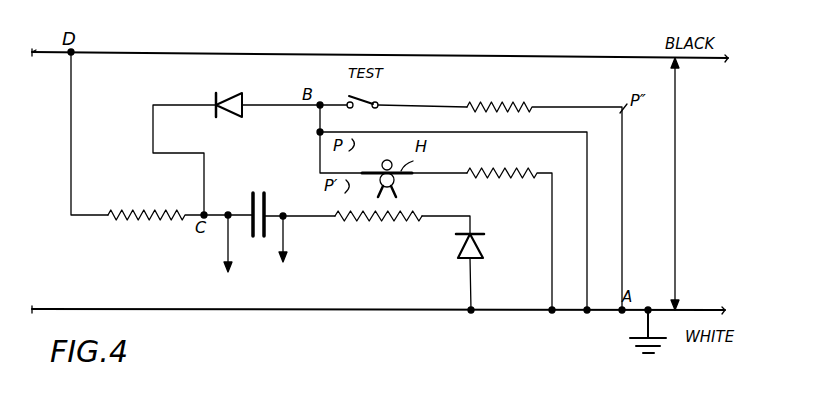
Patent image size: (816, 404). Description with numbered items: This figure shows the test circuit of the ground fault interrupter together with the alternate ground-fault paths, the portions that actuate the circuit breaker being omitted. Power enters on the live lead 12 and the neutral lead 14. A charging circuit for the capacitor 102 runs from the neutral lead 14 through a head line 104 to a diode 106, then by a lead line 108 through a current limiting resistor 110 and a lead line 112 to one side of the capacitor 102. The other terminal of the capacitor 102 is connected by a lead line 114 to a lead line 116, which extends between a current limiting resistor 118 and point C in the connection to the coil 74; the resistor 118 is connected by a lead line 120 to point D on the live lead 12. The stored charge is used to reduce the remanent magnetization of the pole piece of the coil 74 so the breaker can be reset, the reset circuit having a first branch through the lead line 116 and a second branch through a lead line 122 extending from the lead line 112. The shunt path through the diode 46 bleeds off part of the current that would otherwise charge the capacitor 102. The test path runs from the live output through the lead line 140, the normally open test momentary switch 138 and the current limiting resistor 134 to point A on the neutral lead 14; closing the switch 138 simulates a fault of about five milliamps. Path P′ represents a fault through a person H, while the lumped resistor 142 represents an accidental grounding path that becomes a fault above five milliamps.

The live lead 12 is at (584, 52).
The neutral lead 14 is at (323, 311).
The diode 46 is at (265, 93).
The coil 74 is at (244, 292).
The capacitor 102 is at (261, 195).
The head line 104 is at (477, 288).
The diode 106 is at (487, 251).
The lead line 108 is at (447, 216).
The current limiting resistor 110 is at (406, 226).
The lead line 112 is at (307, 226).
The lead line 114 is at (214, 210).
The lead line 116 is at (222, 260).
The current limiting resistor 118 is at (148, 205).
The lead line 120 is at (765, 191).
The lead line 122 is at (290, 256).
The current limiting resistor 134 is at (508, 88).
The test momentary switch 138 is at (377, 109).
The lead line 140 is at (333, 101).
The resistor 142 is at (500, 180).